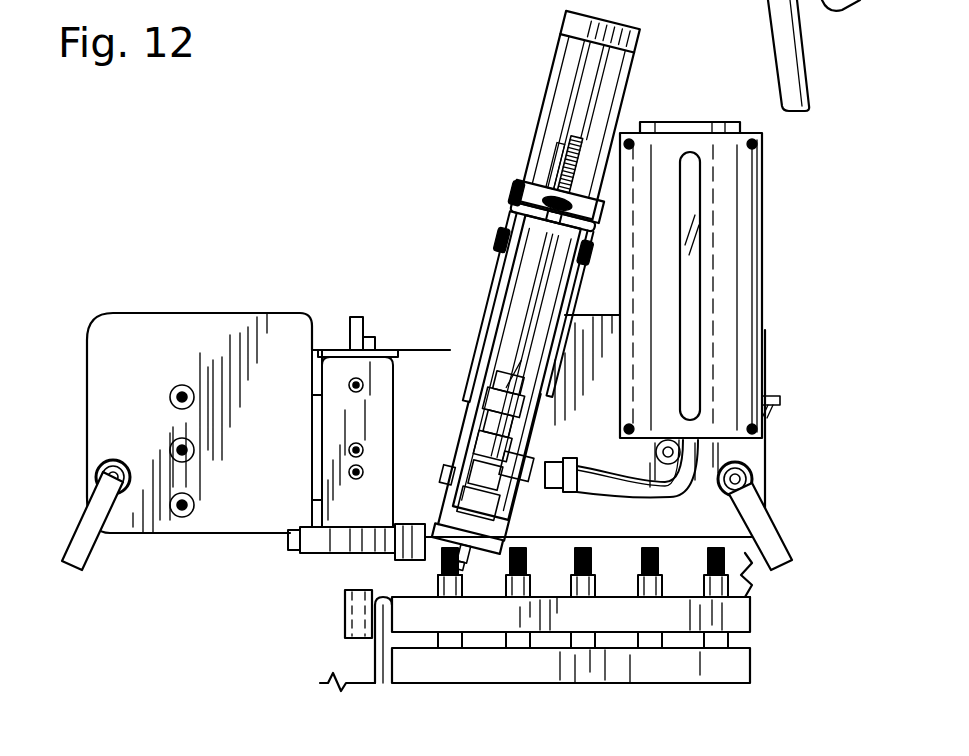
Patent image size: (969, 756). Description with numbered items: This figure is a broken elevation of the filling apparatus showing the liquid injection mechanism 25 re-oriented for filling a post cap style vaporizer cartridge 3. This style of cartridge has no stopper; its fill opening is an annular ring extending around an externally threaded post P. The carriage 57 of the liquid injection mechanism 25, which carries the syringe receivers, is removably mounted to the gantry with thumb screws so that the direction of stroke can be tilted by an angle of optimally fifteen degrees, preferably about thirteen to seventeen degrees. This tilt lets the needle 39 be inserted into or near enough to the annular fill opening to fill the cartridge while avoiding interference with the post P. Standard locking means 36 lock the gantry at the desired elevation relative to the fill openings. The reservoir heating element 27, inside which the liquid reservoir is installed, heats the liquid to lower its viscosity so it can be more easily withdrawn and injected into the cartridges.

The liquid injection mechanism 25 is at (489, 142).
The reservoir heating element 27 is at (774, 237).
The locking means 36 is at (770, 64).
The carriage 57 is at (468, 447).
The post cap style vaporizer cartridge 3 is at (424, 568).
The needle 39 is at (450, 563).
The externally threaded post P is at (440, 553).